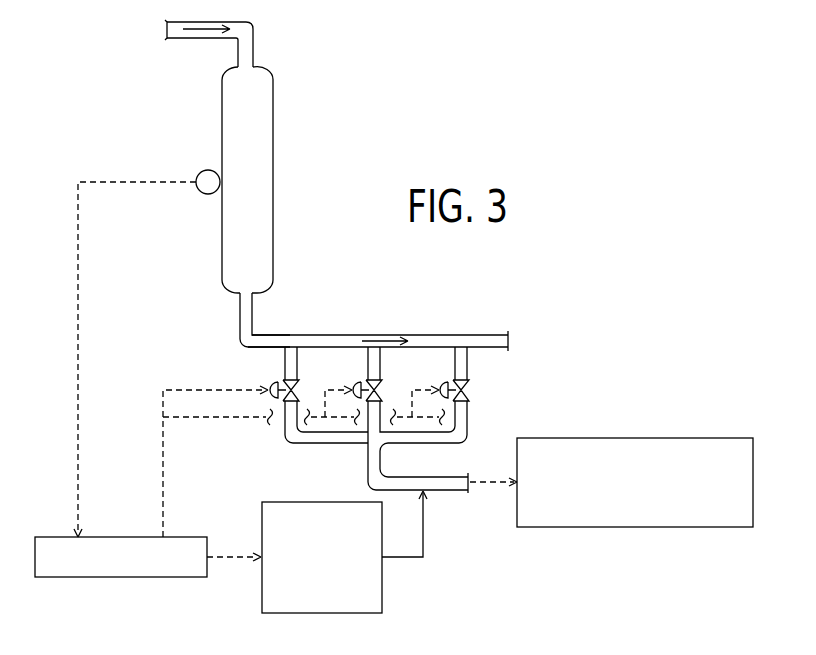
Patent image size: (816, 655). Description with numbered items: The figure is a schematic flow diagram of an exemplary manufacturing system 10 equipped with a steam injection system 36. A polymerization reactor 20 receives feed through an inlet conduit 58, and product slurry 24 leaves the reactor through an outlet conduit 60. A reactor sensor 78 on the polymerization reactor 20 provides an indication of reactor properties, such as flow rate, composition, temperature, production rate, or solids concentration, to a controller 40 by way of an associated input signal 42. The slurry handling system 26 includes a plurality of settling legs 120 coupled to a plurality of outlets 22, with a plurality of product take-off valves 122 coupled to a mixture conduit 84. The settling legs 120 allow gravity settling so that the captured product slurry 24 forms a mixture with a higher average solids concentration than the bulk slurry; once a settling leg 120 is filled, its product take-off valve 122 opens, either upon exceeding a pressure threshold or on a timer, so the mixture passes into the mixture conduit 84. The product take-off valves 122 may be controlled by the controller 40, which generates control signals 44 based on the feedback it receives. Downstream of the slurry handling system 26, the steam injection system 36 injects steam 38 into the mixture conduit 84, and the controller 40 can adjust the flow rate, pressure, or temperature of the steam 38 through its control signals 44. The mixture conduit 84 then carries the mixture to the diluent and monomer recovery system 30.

The manufacturing system 10 is at (333, 100).
The polymerization reactor 20 is at (273, 181).
The outlets 22 is at (285, 353).
The product slurry 24 is at (381, 335).
The slurry handling system 26 is at (482, 373).
The diluent and monomer recovery system 30 is at (636, 438).
The steam injection system 36 is at (383, 590).
The steam 38 is at (423, 530).
The controller 40 is at (120, 578).
The input signals 42 is at (78, 352).
The control signals 44 is at (163, 460).
The inlet conduit 58 is at (251, 32).
The outlet conduit 60 is at (237, 347).
The reactor sensor 78 is at (200, 172).
The mixture conduit 84 is at (405, 477).
The settling legs 120 is at (455, 373).
The product take-off valves 122 is at (285, 408).